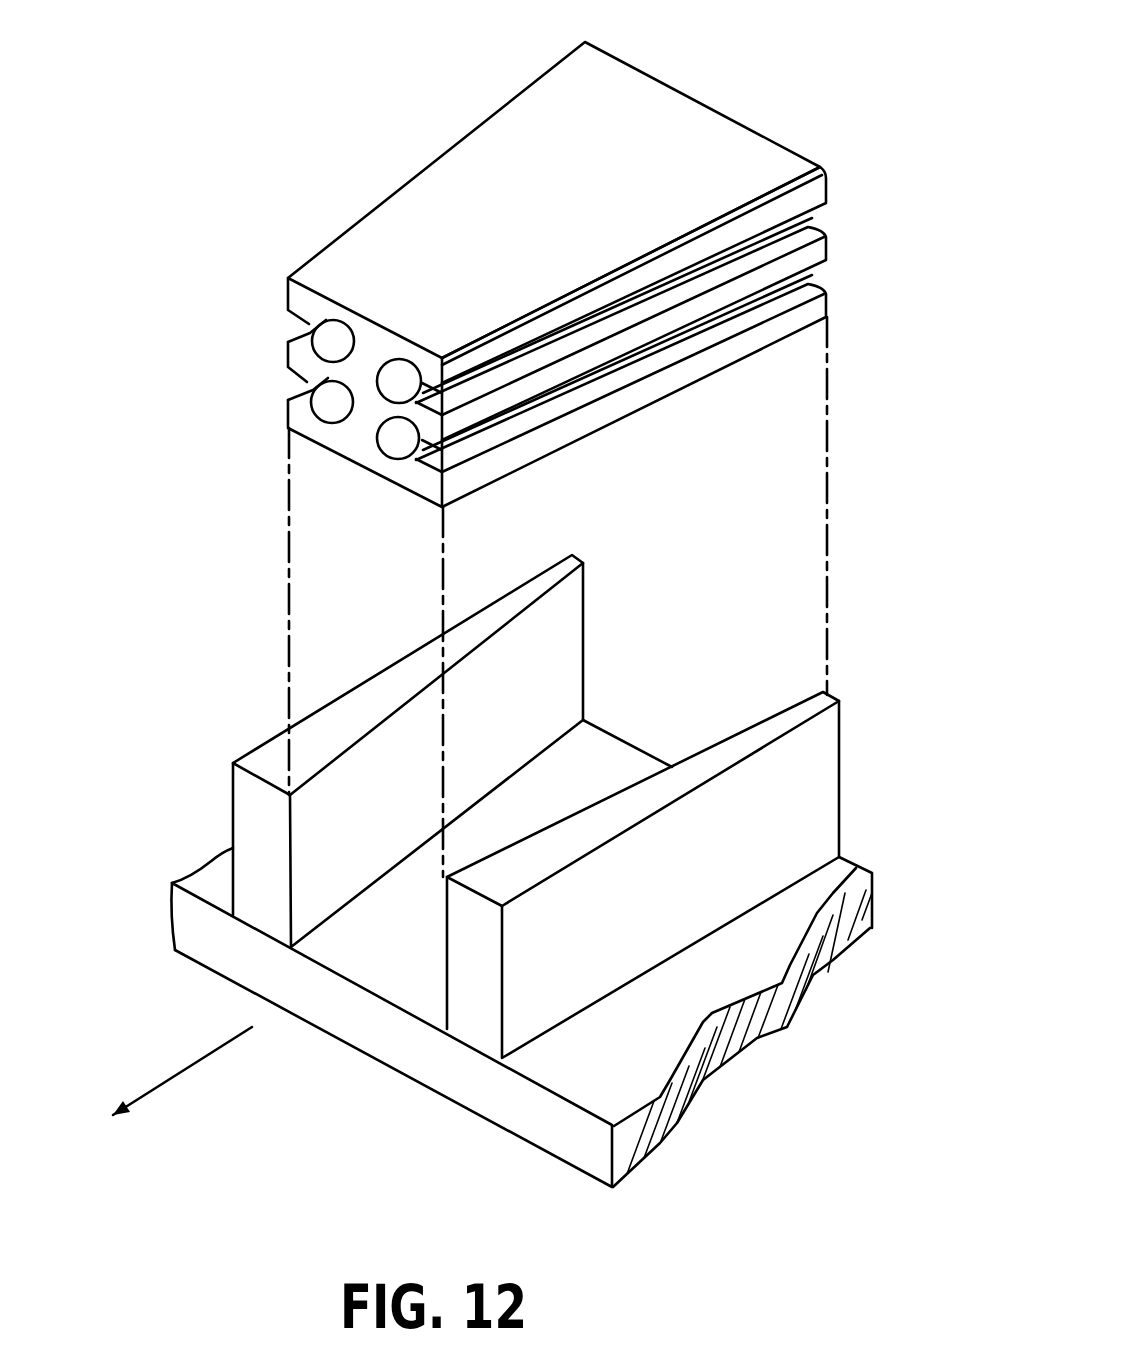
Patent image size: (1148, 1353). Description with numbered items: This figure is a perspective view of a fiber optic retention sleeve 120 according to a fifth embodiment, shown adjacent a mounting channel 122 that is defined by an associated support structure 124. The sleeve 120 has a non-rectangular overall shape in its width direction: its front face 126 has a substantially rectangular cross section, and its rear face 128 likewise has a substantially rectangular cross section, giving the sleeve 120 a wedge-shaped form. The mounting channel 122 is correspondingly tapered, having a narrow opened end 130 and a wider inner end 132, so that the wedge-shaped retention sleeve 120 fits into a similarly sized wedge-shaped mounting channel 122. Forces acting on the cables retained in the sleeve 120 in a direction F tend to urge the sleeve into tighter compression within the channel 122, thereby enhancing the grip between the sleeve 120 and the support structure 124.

The fiber optic retention sleeve 120 is at (660, 108).
The rear face 128 is at (762, 133).
The front face 126 is at (362, 428).
The mounting channel 122 is at (580, 760).
The support structure 124 is at (621, 1074).
The narrow opened end 130 is at (388, 928).
The wider inner end 132 is at (718, 672).
The direction F is at (180, 1070).